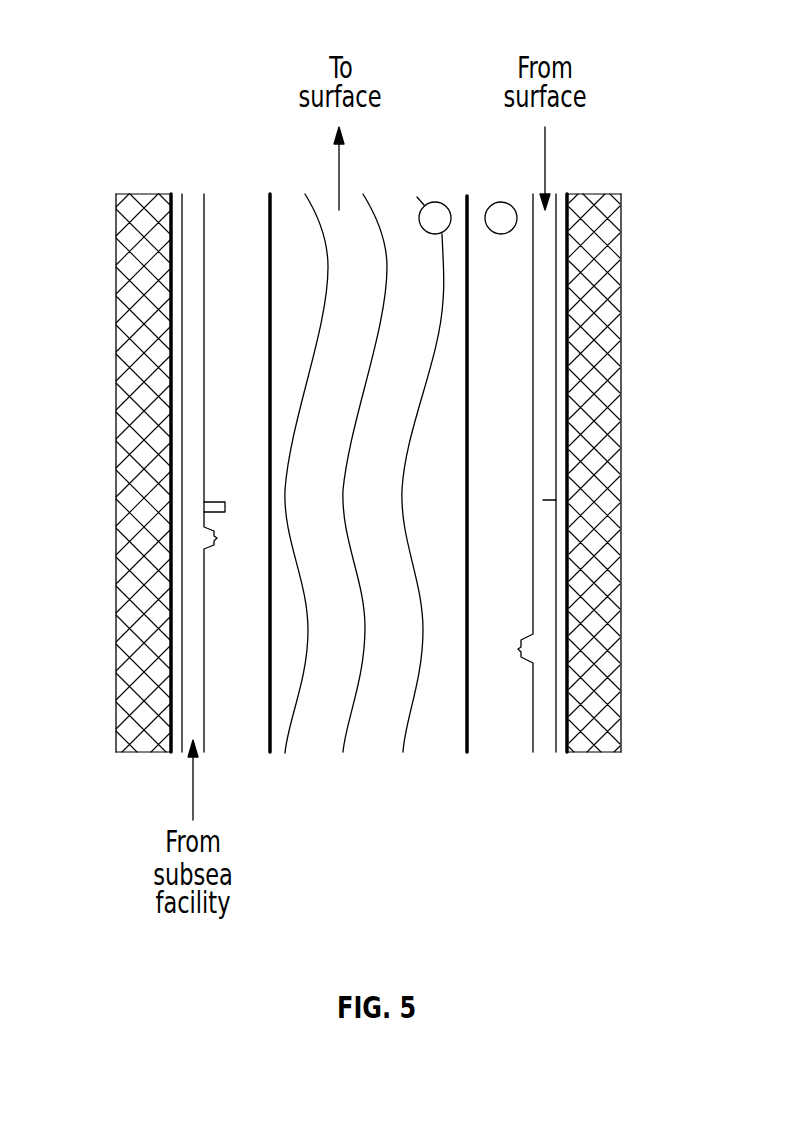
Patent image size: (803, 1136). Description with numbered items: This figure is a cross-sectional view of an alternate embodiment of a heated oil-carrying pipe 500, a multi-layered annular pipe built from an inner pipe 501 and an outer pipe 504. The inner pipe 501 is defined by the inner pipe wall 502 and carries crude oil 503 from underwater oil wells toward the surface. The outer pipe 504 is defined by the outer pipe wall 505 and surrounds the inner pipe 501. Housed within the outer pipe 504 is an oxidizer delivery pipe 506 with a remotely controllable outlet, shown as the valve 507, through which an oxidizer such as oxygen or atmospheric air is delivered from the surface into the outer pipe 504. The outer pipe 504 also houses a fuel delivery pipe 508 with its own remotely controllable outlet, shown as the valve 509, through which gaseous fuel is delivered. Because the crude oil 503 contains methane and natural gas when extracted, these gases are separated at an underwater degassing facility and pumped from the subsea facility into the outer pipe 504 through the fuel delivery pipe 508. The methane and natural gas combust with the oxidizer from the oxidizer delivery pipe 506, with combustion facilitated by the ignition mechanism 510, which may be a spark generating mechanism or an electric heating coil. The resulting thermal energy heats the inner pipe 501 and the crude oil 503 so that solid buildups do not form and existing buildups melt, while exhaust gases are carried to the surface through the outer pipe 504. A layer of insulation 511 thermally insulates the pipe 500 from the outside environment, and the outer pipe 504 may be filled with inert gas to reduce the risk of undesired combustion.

The heated oil-carrying pipe 500 is at (137, 58).
The inner pipe 501 is at (375, 473).
The inner pipe wall 502 is at (468, 202).
The crude oil 503 is at (287, 741).
The outer pipe 504 is at (510, 395).
The outer pipe wall 505 is at (572, 258).
The oxidizer delivery pipe 506 is at (557, 500).
The valve 507 is at (527, 648).
The fuel delivery pipe 508 is at (193, 273).
The valve 509 is at (207, 537).
The ignition mechanism 510 is at (207, 508).
The layer of insulation 511 is at (595, 317).